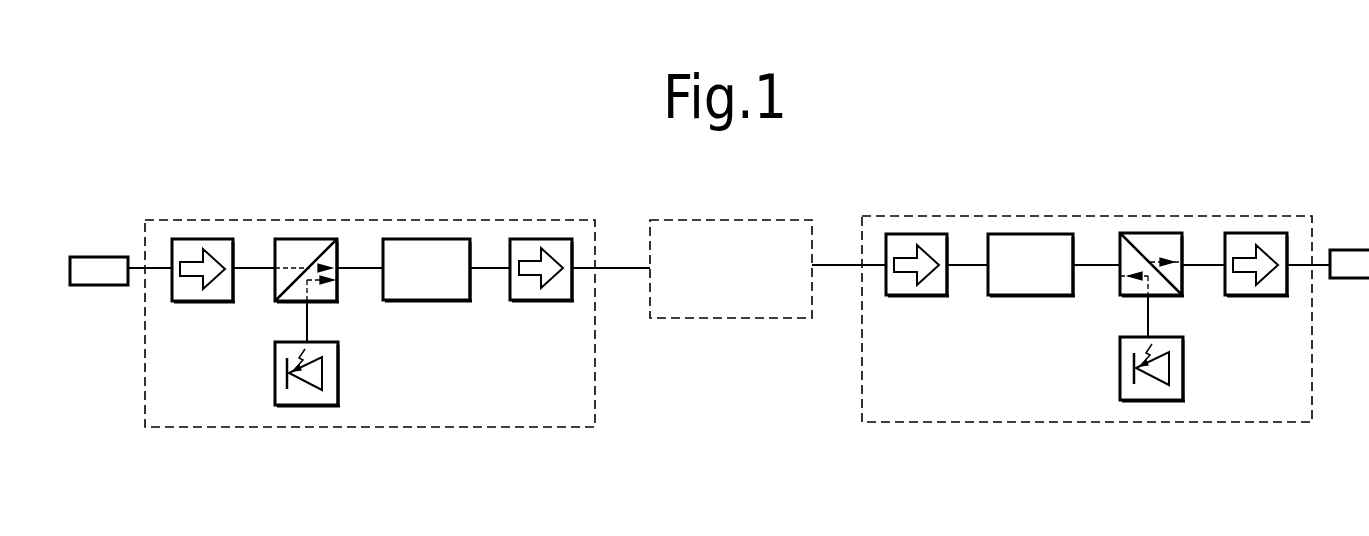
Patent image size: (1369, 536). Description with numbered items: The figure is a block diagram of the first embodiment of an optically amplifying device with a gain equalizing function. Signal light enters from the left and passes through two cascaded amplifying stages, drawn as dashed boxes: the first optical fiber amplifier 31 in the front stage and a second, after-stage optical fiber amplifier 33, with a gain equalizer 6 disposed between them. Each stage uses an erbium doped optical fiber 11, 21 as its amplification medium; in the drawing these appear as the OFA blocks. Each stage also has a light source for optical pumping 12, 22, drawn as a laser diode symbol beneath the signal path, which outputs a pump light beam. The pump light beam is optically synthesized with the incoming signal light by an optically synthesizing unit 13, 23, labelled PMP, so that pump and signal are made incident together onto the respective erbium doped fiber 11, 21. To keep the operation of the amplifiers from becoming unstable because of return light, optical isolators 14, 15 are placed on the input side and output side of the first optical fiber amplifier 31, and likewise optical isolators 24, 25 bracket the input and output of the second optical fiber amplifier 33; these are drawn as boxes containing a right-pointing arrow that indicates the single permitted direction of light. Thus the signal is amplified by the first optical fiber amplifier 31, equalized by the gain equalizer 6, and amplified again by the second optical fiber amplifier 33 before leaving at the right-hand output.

The erbium doped optical fiber 11 is at (436, 239).
The light source for optical pumping 12 is at (308, 406).
The optically synthesizing unit 13 is at (318, 239).
The optical isolator 14 is at (199, 239).
The optical isolator 15 is at (540, 239).
The gain equalizer 6 is at (733, 321).
The erbium doped optical fiber 21 is at (1033, 234).
The light source for optical pumping 22 is at (1150, 401).
The optically synthesizing unit 23 is at (1152, 233).
The optical isolator 24 is at (917, 234).
The optical isolator 25 is at (1255, 233).
The first optical fiber amplifier 31 is at (457, 430).
The second amplifying stage 33 is at (921, 425).